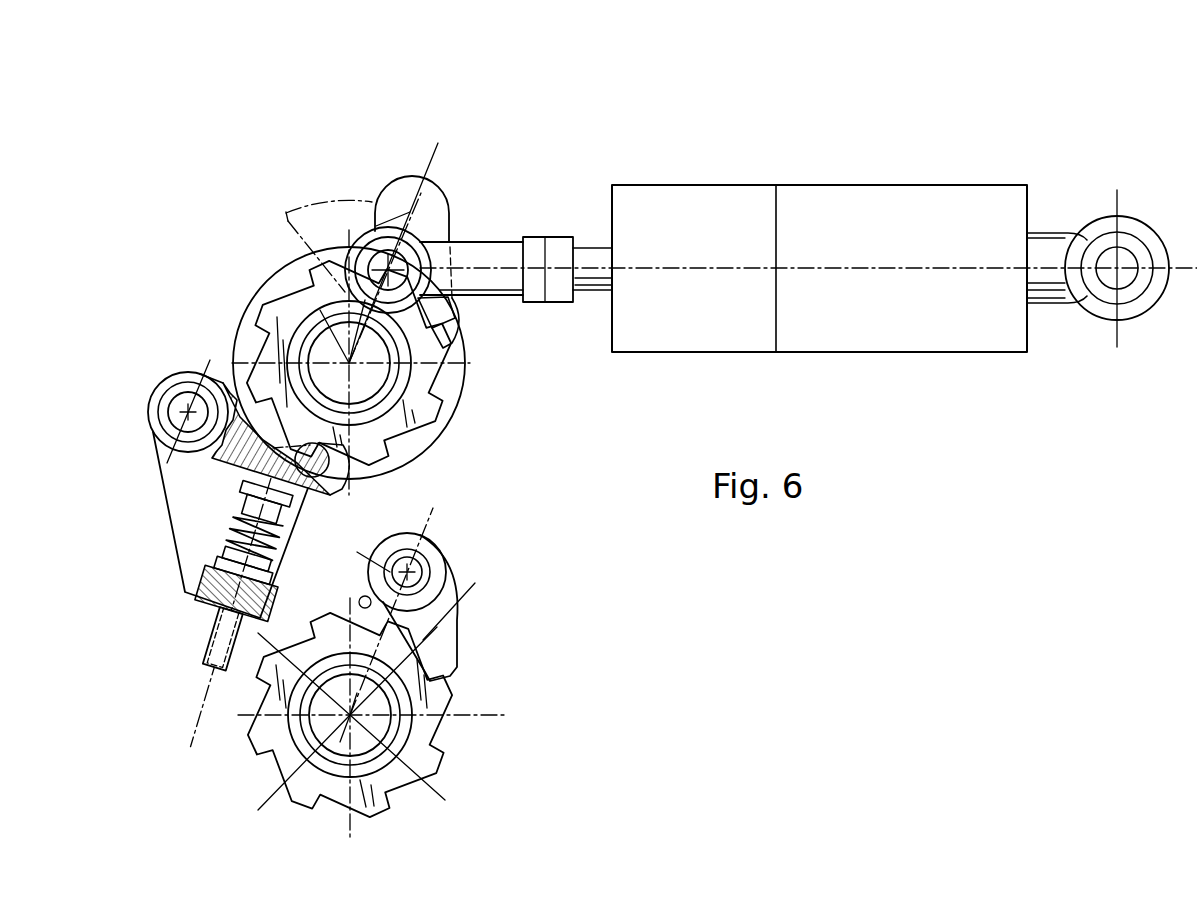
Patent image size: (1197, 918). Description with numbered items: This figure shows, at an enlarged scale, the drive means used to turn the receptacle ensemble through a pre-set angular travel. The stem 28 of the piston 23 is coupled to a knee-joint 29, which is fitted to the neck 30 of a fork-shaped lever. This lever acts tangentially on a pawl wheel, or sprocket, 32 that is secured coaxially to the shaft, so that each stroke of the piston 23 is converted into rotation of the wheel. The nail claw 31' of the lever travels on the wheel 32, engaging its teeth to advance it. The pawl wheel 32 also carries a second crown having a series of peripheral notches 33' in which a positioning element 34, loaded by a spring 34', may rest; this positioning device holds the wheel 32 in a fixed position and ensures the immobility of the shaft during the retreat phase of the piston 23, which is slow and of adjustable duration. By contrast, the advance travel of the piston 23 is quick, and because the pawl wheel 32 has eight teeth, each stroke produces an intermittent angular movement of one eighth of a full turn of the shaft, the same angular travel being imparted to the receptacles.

The piston 23 is at (818, 218).
The stem 28 is at (493, 290).
The knee-joint 29 is at (400, 250).
The neck 30 is at (378, 257).
The nail claw 31' is at (400, 400).
The pawl wheel 32 is at (295, 300).
The peripheral notches 33' is at (204, 489).
The positioning element 34 is at (201, 607).
The spring 34' is at (278, 545).